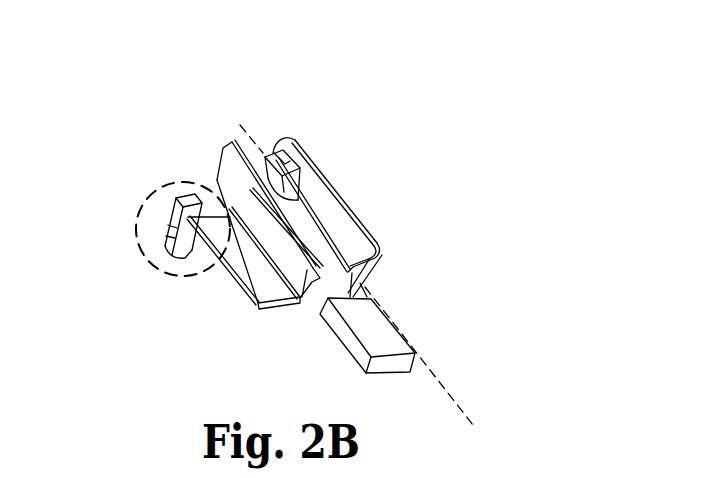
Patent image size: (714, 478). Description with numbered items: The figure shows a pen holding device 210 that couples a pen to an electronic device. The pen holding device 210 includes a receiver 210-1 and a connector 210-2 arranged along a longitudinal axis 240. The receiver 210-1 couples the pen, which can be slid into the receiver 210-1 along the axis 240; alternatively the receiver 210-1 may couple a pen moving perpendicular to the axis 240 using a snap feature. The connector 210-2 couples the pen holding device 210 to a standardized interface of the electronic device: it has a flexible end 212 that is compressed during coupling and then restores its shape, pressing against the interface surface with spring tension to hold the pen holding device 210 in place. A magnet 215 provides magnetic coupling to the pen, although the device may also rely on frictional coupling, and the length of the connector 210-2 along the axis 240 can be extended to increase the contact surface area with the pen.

The pen holding device 210 is at (150, 99).
The receiver 210-1 is at (356, 190).
The connector 210-2 is at (225, 286).
The flexible end 212 is at (145, 187).
The magnet 215 is at (390, 309).
The axis 240 is at (452, 391).